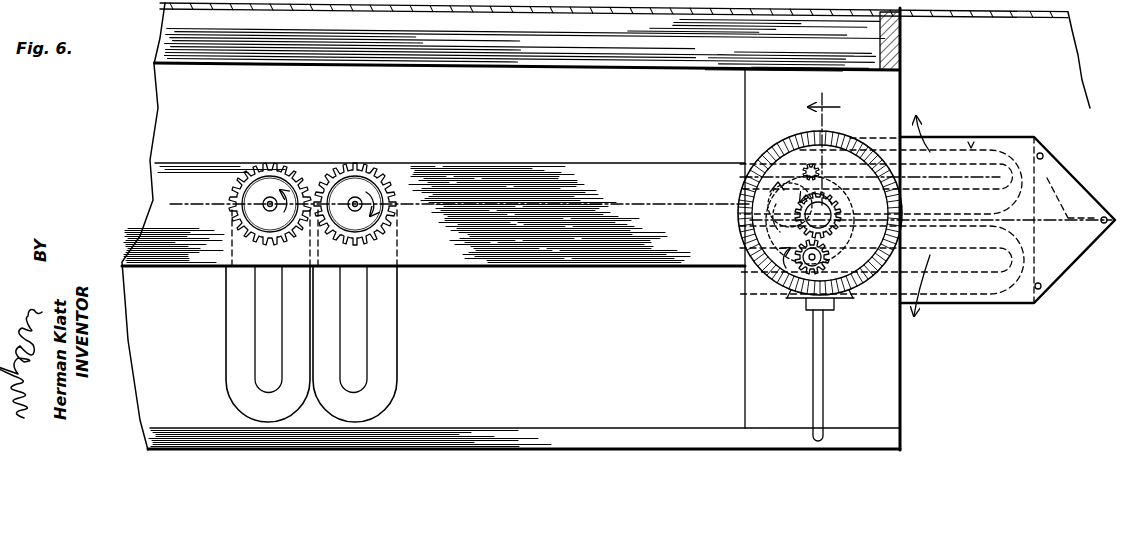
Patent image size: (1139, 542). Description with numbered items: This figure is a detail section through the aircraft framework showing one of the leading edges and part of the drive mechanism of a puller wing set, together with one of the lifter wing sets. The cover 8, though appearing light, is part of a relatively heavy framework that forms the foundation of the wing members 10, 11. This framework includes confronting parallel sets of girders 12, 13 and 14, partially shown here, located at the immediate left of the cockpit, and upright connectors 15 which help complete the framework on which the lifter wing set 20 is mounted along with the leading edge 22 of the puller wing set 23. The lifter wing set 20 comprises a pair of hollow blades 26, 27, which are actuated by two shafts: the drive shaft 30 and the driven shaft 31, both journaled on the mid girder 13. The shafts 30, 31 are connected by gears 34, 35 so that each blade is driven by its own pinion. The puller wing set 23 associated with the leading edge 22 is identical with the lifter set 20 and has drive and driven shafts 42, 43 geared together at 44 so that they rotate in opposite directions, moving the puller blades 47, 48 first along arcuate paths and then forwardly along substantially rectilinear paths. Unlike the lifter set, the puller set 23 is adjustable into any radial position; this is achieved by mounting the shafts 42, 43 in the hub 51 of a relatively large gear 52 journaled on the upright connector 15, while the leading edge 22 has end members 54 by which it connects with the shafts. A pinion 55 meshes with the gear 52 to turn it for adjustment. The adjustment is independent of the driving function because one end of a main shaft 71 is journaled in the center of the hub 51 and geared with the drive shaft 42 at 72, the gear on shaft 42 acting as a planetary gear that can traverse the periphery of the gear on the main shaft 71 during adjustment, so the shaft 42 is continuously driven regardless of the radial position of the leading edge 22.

The cover 8 is at (648, 222).
The wing member 10 is at (906, 92).
The wing member 11 is at (772, 340).
The girder 12 is at (540, 68).
The mid girder 13 is at (525, 166).
The girder 14 is at (499, 430).
The upright connector 15 is at (900, 372).
The lifter wing set 20 is at (425, 296).
The leading edge 22 is at (1052, 168).
The puller wing set 23 is at (984, 318).
The hollow blade 26 is at (384, 323).
The hollow blade 27 is at (232, 323).
The drive shaft 30 is at (355, 197).
The driven shaft 31 is at (270, 197).
The gear 34 is at (382, 174).
The gear 35 is at (238, 178).
The drive shaft 42 is at (796, 262).
The driven shaft 43 is at (804, 172).
The gearing 44 is at (742, 186).
The puller blade 47 is at (882, 260).
The puller blade 48 is at (881, 176).
The hub 51 is at (766, 228).
The large gear 52 is at (780, 152).
The end member 54 is at (1030, 140).
The pinion 55 is at (842, 304).
The main shaft 71 is at (806, 216).
The gearing 72 is at (832, 262).